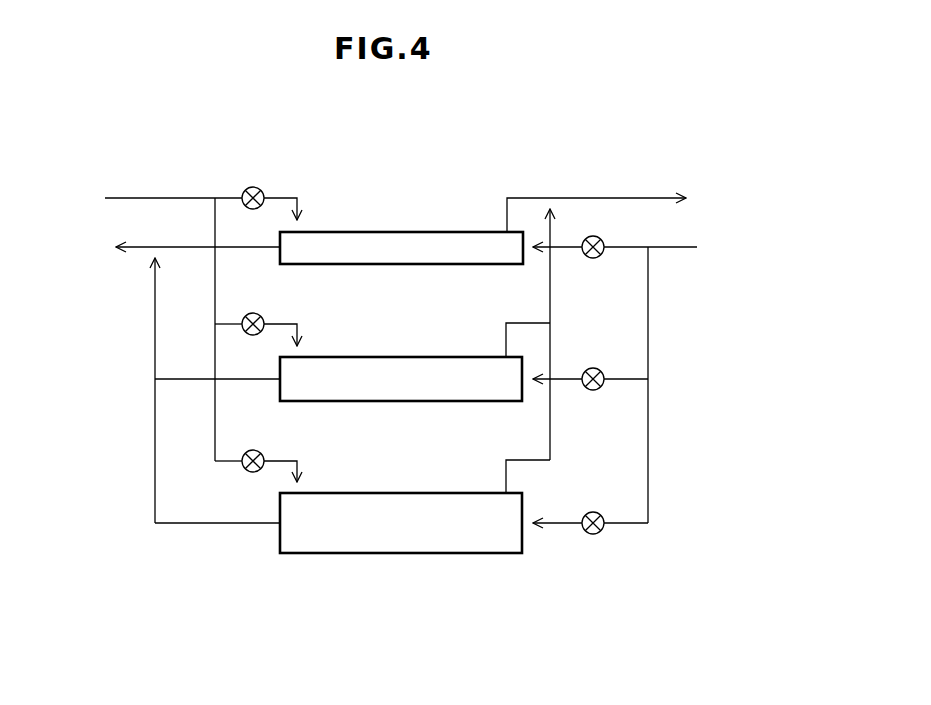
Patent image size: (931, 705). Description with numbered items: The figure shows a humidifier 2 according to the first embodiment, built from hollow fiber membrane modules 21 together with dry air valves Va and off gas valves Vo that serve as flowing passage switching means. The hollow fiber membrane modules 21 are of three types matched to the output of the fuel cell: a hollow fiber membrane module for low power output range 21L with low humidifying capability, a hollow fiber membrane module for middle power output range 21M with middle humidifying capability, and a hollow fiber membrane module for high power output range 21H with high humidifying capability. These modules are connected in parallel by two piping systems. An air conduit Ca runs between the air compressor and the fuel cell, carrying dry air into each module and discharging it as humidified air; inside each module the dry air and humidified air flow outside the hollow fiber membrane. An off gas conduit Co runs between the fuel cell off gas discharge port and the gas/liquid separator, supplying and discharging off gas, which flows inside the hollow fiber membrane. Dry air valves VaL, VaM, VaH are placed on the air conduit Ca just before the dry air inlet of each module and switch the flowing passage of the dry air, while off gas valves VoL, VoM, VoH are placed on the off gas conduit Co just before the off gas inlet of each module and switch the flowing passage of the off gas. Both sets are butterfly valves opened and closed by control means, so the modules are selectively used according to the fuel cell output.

The humidifier 2 is at (478, 166).
The hollow fiber membrane module 21 is at (401, 364).
The hollow fiber membrane module for low power output range 21L is at (346, 230).
The hollow fiber membrane module for middle power output range 21M is at (346, 356).
The hollow fiber membrane module for high power output range 21H is at (346, 492).
The air conduit Ca is at (184, 197).
The off gas conduit Co is at (132, 250).
The dry air valves Va is at (279, 310).
The dry air valve for low power output range module VaL is at (256, 187).
The dry air valve for middle power output range module VaM is at (256, 313).
The dry air valve for high power output range module VaH is at (256, 450).
The off gas valves Vo is at (596, 426).
The off gas valve for low power output range module VoL is at (593, 259).
The off gas valve for middle power output range module VoM is at (593, 391).
The off gas valve for high power output range module VoH is at (593, 535).